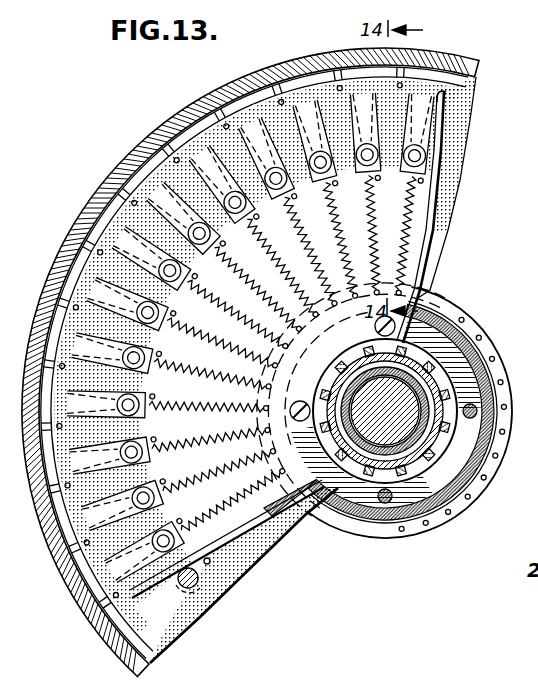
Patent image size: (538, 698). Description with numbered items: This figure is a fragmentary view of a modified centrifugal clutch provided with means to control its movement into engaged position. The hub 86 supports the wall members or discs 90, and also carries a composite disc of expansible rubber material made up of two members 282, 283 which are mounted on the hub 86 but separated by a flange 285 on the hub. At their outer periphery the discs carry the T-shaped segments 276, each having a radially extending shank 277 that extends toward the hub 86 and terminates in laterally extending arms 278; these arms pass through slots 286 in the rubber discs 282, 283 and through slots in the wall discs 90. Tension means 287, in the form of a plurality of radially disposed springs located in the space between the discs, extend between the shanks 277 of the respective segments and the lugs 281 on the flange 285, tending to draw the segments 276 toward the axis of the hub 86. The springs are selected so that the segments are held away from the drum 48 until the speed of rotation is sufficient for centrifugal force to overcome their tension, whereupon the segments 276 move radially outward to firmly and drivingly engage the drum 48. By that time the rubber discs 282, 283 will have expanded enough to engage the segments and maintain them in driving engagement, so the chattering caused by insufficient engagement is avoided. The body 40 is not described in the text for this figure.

The drum 48 is at (478, 61).
The T-shaped segments 276 is at (468, 81).
The drum body 40 is at (462, 99).
The expansible disc member 282 is at (461, 122).
The slots 286 is at (434, 143).
The wall members or discs 90 is at (443, 181).
The tension means 287 is at (429, 216).
The flange 285 is at (422, 306).
The hub 86 is at (424, 505).
The lugs 281 is at (372, 532).
The expansible disc member 283 is at (250, 578).
The laterally extending arms 278 is at (218, 592).
The radially extending shanks 277 is at (172, 618).